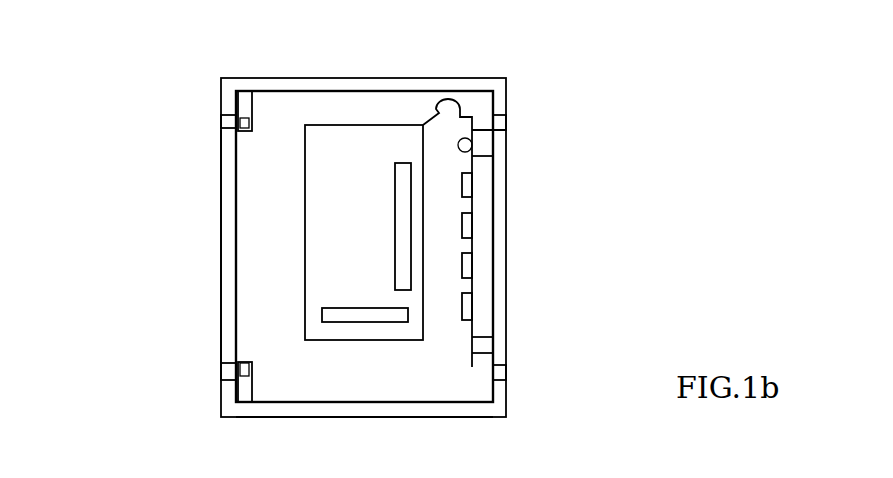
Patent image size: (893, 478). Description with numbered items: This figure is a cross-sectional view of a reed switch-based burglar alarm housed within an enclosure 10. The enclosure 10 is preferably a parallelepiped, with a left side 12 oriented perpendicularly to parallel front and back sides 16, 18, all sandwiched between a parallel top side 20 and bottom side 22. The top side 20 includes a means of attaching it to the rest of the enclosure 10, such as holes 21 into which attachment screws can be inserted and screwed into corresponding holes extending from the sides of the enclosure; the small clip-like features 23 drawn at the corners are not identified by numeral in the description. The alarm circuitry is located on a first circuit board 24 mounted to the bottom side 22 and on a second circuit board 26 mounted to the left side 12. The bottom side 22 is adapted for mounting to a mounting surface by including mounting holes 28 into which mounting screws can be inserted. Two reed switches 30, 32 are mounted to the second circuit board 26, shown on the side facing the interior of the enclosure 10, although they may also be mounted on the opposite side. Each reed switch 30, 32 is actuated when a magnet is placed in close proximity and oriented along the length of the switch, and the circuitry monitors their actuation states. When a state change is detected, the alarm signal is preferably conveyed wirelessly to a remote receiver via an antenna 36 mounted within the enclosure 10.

The enclosure 10 is at (105, 295).
The left side 12 is at (265, 162).
The front side 16 is at (408, 85).
The back side 18 is at (365, 410).
The top side 20 is at (222, 240).
The holes 21 is at (223, 117).
The bottom side 22 is at (507, 288).
The clip 23 is at (242, 123).
The first circuit board 24 is at (471, 353).
The second circuit board 26 is at (353, 140).
The mounting holes 28 is at (500, 120).
The reed switch 30 is at (393, 175).
The reed switch 32 is at (332, 310).
The antenna 36 is at (468, 143).